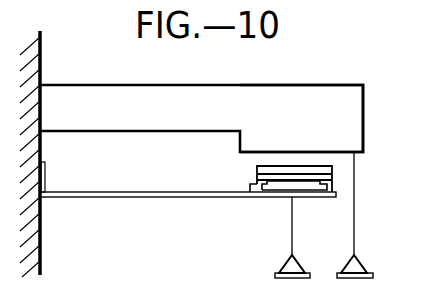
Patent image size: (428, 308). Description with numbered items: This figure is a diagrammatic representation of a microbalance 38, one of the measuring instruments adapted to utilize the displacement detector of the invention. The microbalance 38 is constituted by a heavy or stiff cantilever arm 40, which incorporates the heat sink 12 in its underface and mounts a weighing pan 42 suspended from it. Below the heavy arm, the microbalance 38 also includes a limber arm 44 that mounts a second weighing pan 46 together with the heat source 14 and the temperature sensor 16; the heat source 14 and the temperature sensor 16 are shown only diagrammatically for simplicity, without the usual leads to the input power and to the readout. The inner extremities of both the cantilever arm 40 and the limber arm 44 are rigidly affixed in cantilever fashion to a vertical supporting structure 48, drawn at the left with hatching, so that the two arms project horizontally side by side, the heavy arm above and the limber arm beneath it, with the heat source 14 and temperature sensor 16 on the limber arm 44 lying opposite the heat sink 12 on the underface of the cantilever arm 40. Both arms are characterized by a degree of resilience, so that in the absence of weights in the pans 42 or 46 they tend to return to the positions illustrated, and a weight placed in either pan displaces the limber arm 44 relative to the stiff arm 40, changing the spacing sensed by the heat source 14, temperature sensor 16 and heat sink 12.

The heat sink 12 is at (341, 153).
The heat source 14 is at (257, 168).
The temperature sensor 16 is at (257, 178).
The microbalance 38 is at (170, 82).
The cantilever arm 40 is at (303, 85).
The weighing pan 42 is at (375, 276).
The limber arm 44 is at (171, 198).
The weighing pan 46 is at (276, 275).
The vertical supporting structure 48 is at (41, 56).